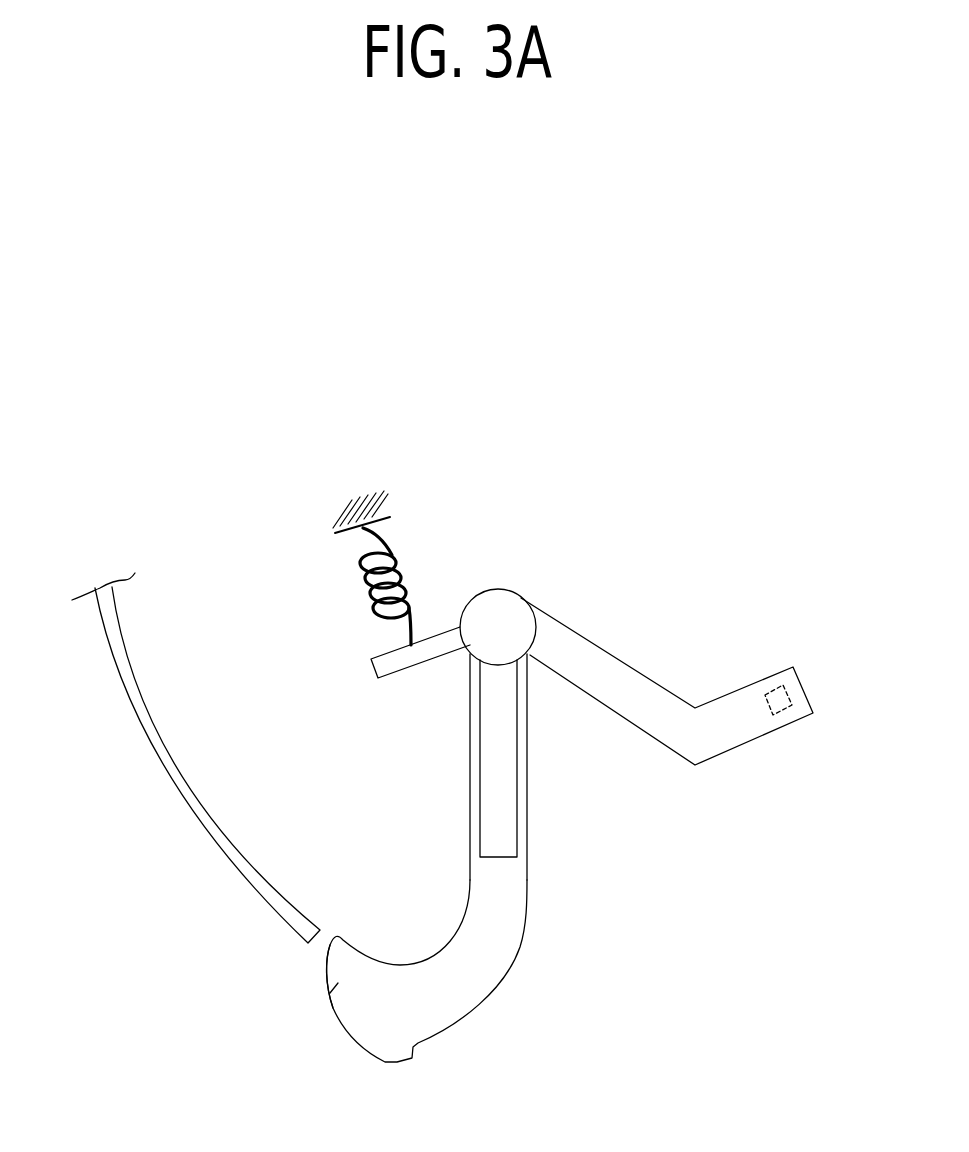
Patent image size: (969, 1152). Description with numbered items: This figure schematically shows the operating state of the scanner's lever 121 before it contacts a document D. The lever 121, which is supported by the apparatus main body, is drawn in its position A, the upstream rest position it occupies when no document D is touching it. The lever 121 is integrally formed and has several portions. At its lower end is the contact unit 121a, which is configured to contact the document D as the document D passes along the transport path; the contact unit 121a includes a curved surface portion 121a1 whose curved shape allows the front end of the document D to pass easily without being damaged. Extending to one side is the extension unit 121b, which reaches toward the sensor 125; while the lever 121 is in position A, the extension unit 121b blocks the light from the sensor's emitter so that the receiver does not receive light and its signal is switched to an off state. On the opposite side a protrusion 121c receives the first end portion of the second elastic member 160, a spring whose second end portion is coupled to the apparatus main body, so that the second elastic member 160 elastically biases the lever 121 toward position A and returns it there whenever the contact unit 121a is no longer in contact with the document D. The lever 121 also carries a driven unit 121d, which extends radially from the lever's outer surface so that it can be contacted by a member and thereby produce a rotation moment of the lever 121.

The second elastic member 160 is at (400, 562).
The lever 121 is at (517, 607).
The extension unit 121b is at (743, 737).
The sensor 125 is at (782, 663).
The protrusion 121c is at (383, 673).
The driven unit 121d is at (497, 825).
The contact unit 121a is at (395, 1047).
The curved surface portion 121a1 is at (343, 1030).
The position A is at (330, 993).
The document D is at (178, 763).